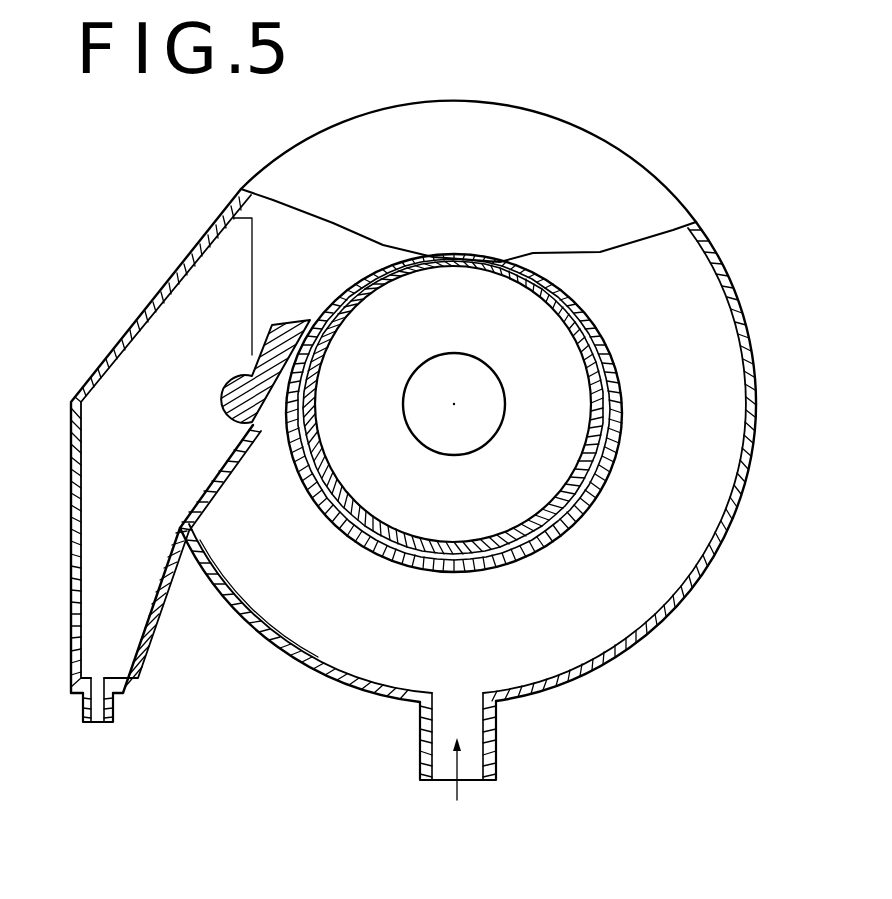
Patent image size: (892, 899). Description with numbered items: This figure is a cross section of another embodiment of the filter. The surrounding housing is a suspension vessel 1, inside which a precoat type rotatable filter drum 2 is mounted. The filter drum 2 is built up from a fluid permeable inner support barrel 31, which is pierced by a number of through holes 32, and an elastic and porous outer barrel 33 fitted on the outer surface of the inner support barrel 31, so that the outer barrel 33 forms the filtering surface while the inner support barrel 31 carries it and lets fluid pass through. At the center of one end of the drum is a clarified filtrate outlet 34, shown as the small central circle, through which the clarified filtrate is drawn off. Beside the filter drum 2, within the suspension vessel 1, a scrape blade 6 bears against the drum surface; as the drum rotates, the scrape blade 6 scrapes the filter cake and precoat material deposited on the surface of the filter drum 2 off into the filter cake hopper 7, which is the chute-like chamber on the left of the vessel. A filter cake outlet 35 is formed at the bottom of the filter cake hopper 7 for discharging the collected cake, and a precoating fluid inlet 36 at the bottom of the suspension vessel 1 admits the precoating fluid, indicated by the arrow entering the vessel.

The suspension vessel 1 is at (708, 315).
The precoat type rotatable filter drum 2 is at (605, 312).
The scrape blade 6 is at (245, 378).
The filter cake hopper 7 is at (103, 533).
The fluid permeable inner support barrel 31 is at (590, 386).
The through holes 32 is at (346, 492).
The elastic and porous outer barrel 33 is at (620, 405).
The clarified filtrate outlet 34 is at (450, 370).
The filter cake outlet 35 is at (97, 710).
The precoating fluid inlet 36 is at (473, 752).